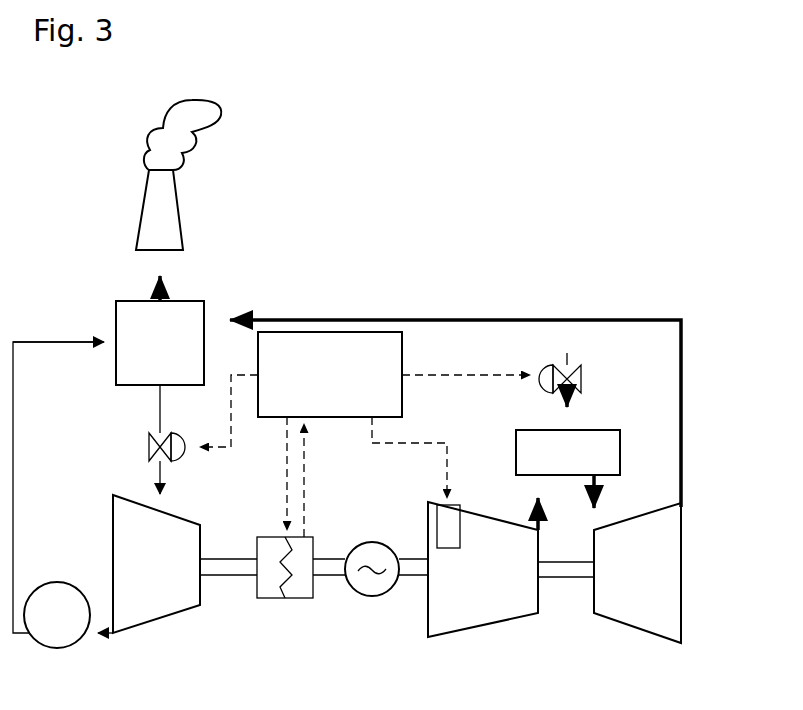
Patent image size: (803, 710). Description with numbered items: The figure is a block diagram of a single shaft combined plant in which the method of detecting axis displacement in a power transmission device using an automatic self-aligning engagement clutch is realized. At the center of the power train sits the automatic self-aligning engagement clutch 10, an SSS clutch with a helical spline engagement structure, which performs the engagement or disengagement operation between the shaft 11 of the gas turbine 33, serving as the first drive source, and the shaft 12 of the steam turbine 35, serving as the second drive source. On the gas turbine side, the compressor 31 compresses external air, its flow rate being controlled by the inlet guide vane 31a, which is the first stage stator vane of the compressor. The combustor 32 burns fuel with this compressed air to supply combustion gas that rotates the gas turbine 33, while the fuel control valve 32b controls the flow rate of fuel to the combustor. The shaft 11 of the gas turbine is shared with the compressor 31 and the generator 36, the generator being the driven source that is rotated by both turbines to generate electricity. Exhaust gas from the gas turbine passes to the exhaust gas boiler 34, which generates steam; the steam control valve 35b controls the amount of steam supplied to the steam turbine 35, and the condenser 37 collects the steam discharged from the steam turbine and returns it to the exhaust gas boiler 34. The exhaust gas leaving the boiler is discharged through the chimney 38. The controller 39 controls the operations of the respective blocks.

The automatic self-aligning engagement clutch 10 is at (288, 598).
The shaft 11 is at (333, 577).
The shaft 12 is at (229, 576).
The compressor 31 is at (487, 517).
The inlet guide vane 31a is at (436, 517).
The combustor 32 is at (568, 476).
The fuel control valve 32b is at (582, 379).
The gas turbine 33 is at (682, 606).
The exhaust gas boiler 34 is at (116, 373).
The steam turbine 35 is at (202, 542).
The steam control valve 35b is at (148, 447).
The generator 36 is at (376, 596).
The condenser 37 is at (62, 582).
The chimney 38 is at (178, 208).
The controller 39 is at (403, 352).